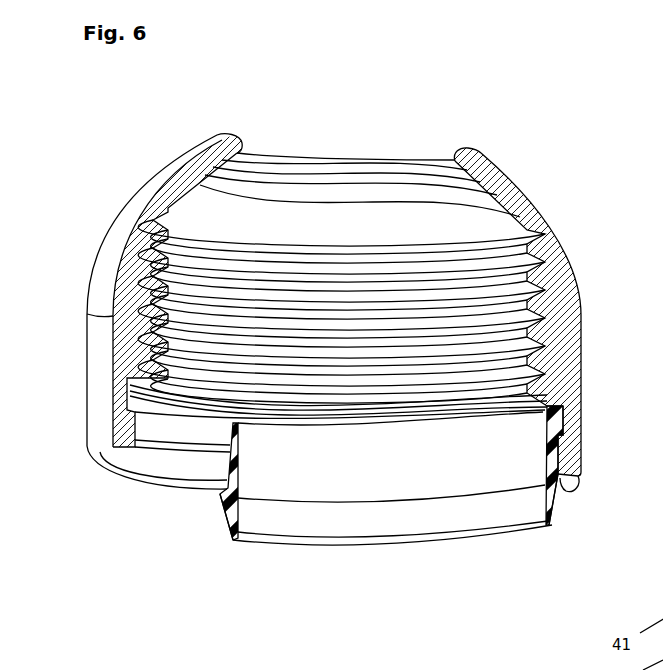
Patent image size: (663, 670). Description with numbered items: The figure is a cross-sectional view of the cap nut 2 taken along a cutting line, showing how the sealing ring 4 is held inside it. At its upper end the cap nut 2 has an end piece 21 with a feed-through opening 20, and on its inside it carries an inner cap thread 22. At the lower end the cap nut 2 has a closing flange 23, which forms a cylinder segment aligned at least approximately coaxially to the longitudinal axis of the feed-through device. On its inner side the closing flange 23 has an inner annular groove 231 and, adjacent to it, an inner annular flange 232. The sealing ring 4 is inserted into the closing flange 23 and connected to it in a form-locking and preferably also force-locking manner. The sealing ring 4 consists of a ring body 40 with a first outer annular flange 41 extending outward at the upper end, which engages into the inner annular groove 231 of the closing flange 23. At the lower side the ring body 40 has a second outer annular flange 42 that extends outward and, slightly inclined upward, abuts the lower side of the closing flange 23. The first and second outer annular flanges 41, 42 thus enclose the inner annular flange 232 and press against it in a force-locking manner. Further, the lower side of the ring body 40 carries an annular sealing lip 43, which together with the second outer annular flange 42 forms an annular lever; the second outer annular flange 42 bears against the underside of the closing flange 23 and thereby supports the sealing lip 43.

The cap nut 2 is at (414, 116).
The feed-through opening 20 is at (340, 218).
The end piece 21 is at (483, 170).
The inner cap thread 22 is at (520, 343).
The closing flange 23 is at (567, 467).
The inner annular groove 231 is at (583, 402).
The inner annular flange 232 is at (570, 453).
The sealing ring 4 is at (364, 512).
The ring body 40 is at (325, 478).
The first outer annular flange 41 is at (553, 433).
The second outer annular flange 42 is at (575, 488).
The annular sealing lip 43 is at (557, 523).